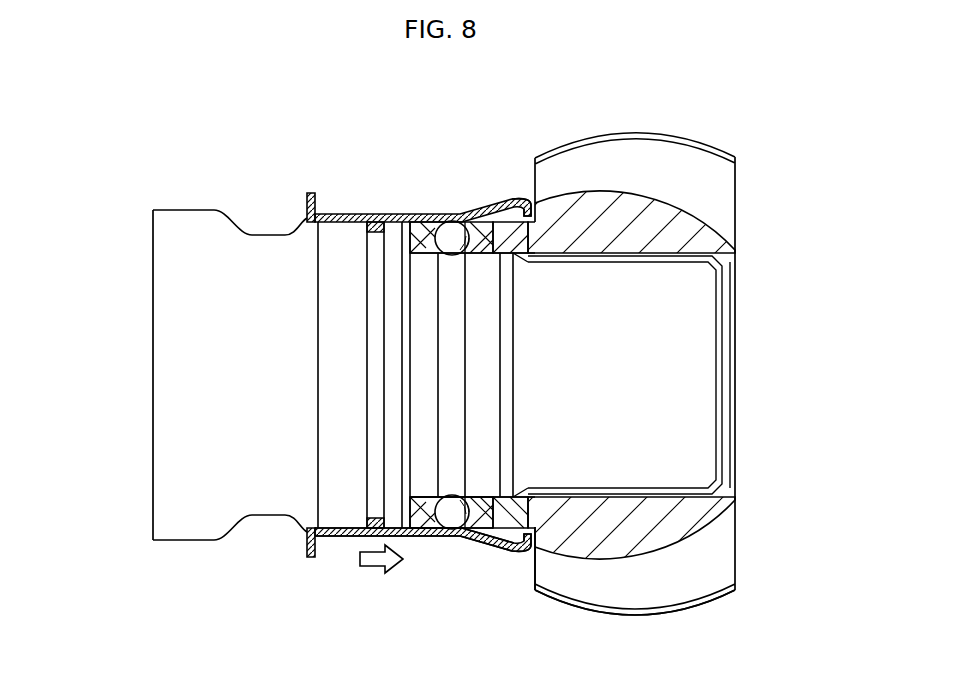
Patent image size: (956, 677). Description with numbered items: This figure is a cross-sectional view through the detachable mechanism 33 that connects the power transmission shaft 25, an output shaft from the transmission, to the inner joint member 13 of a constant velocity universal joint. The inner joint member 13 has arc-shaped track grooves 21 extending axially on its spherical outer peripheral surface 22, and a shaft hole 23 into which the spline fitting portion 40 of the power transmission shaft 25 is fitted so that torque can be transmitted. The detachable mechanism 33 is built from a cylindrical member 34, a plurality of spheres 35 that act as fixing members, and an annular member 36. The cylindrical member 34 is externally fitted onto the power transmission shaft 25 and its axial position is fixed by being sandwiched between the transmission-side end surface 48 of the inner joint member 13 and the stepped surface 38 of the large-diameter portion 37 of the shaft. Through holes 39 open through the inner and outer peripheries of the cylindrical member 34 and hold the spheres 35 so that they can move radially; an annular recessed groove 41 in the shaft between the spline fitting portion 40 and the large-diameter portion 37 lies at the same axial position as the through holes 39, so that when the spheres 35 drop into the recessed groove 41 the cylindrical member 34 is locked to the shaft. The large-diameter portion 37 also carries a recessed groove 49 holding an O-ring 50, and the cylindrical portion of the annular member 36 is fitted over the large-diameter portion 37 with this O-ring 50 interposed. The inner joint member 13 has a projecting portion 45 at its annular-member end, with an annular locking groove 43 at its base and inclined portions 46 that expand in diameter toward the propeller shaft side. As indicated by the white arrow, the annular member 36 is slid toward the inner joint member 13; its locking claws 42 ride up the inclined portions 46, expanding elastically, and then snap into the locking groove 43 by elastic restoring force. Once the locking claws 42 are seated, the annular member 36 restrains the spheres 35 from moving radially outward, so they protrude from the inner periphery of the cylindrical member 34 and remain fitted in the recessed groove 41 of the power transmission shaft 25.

The inner joint member 13 is at (699, 142).
The track grooves 21 is at (706, 528).
The spherical outer peripheral surface 22 is at (712, 604).
The shaft hole 23 is at (682, 478).
The power transmission shaft 25 is at (153, 503).
The detachable mechanism 33 is at (433, 494).
The cylindrical member 34 is at (426, 537).
The spheres 35 is at (455, 256).
The annular member 36 is at (353, 213).
The large-diameter portion 37 is at (393, 378).
The stepped surface 38 is at (428, 220).
The through holes 39 is at (446, 480).
The spline fitting portion 40 is at (690, 248).
The recessed groove 41 is at (455, 362).
The locking claws 42 is at (519, 200).
The locking groove 43 is at (553, 490).
The projecting portion 45 is at (527, 257).
The inclined portions 46 is at (492, 548).
The transmission-side end surface 48 is at (474, 220).
The recessed groove 49 is at (375, 318).
The O-ring 50 is at (372, 233).